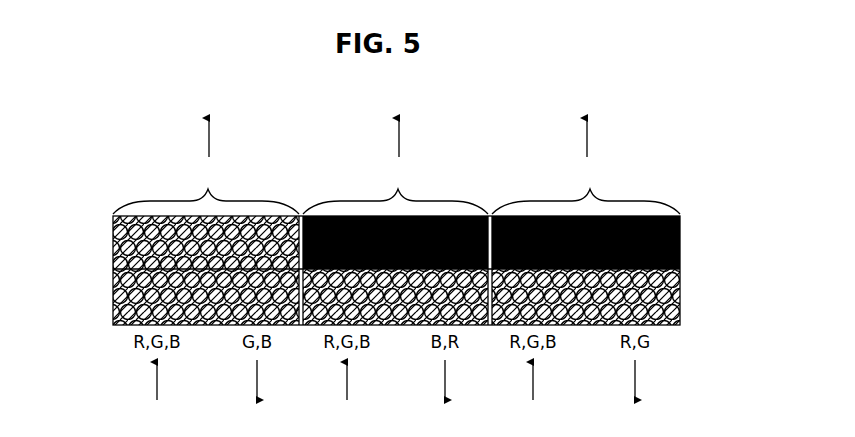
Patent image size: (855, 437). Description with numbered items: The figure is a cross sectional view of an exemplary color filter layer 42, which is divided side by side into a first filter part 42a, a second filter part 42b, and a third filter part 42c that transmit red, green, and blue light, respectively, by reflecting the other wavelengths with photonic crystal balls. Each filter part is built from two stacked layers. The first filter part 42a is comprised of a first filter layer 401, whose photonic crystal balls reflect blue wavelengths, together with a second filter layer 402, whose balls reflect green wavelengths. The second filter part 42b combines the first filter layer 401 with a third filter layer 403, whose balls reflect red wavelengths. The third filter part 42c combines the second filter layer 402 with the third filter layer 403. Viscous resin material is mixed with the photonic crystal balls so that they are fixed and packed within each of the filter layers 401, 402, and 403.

The color filter layer 42 is at (112, 216).
The first filter part 42a is at (206, 166).
The second filter part 42b is at (395, 166).
The third filter part 42c is at (586, 166).
The first filter layer 401 is at (112, 308).
The second filter layer 402 is at (112, 221).
The third filter layer 403 is at (455, 215).